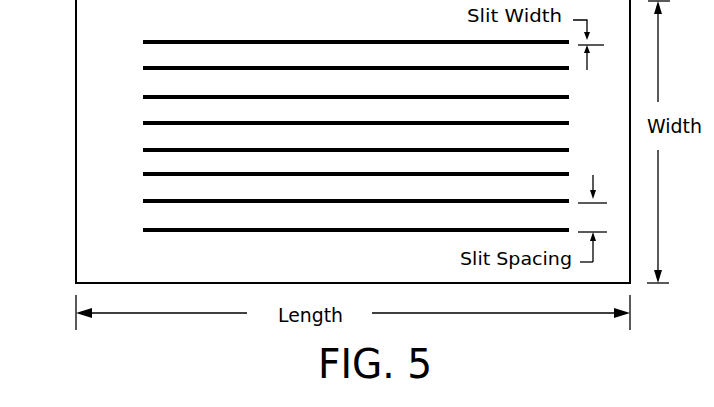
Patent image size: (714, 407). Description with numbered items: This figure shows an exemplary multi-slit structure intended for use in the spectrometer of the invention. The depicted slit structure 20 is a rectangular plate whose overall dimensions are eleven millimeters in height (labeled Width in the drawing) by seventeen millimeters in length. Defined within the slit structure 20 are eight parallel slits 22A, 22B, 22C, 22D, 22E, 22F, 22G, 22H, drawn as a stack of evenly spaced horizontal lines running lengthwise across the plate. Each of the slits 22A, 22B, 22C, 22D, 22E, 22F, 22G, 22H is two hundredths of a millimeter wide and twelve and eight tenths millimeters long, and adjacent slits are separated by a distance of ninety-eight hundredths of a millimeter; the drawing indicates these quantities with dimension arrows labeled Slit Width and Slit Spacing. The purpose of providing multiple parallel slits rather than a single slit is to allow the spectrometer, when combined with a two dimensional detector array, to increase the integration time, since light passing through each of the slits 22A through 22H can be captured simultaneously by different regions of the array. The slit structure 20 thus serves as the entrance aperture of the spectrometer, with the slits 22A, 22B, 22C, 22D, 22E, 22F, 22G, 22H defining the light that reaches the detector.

The slit structure 20 is at (75, 241).
The parallel slit 22A is at (211, 39).
The parallel slit 22B is at (211, 65).
The parallel slit 22C is at (211, 94).
The parallel slit 22D is at (211, 120).
The parallel slit 22E is at (211, 147).
The parallel slit 22F is at (211, 171).
The parallel slit 22G is at (211, 198).
The parallel slit 22H is at (211, 227).